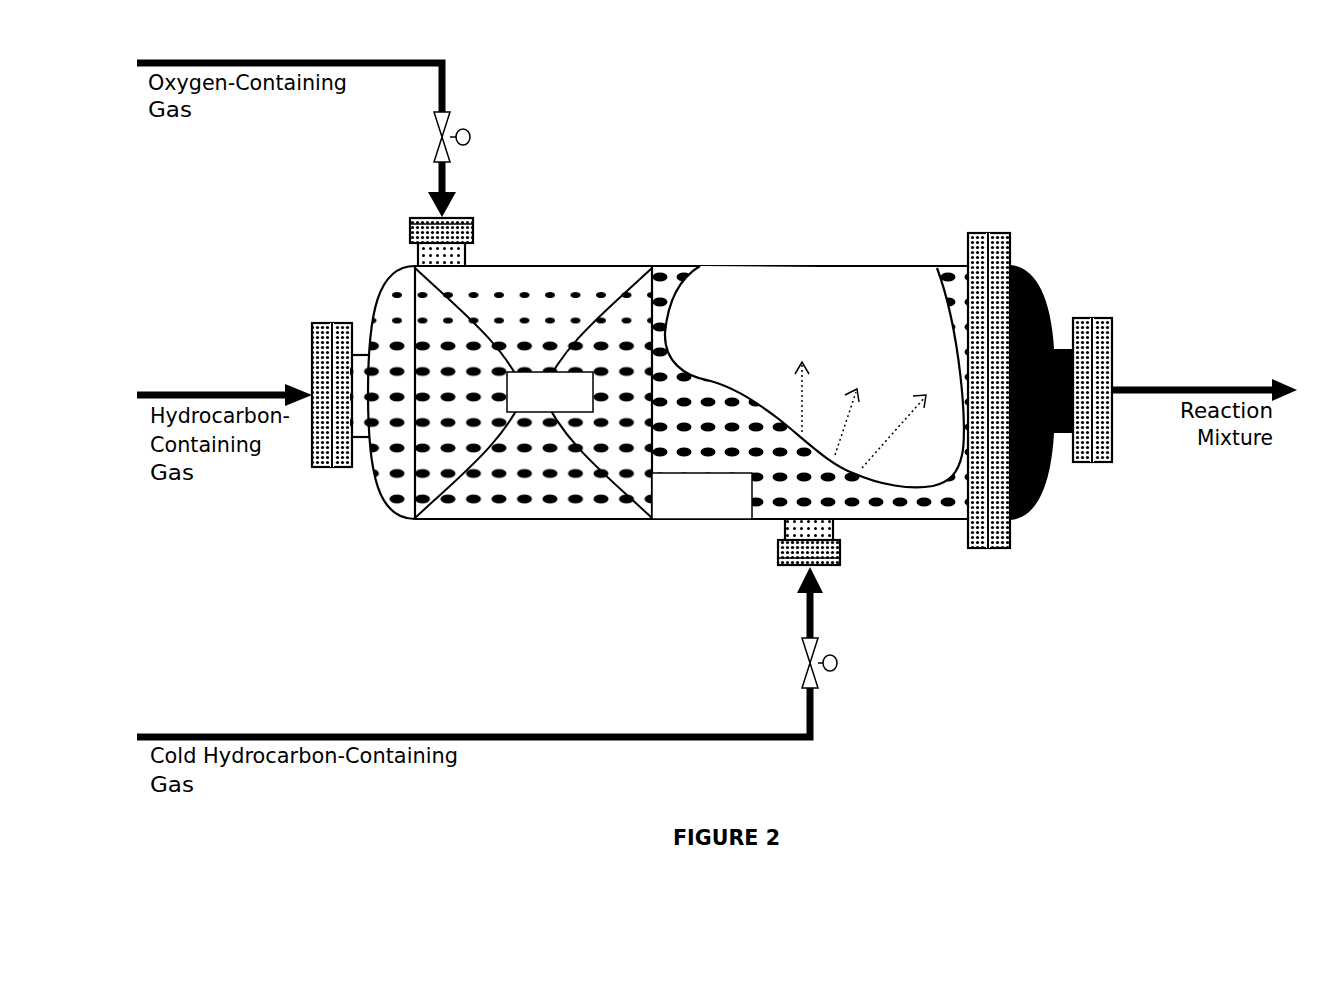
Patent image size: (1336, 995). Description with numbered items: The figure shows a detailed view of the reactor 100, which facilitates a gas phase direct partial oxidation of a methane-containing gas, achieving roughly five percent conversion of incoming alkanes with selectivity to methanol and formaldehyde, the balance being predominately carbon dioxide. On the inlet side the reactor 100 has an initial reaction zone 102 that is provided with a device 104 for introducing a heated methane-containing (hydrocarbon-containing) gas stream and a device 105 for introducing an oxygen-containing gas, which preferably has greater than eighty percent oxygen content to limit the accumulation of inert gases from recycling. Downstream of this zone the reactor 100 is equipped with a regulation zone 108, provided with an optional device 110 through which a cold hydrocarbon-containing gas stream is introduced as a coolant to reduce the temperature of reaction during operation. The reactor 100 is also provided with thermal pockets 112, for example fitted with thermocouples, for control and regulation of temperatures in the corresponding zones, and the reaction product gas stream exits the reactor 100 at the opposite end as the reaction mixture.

The reactor 100 is at (711, 352).
The initial reaction zone 102 is at (533, 393).
The device for introducing a heated methane-containing gas stream 104 is at (325, 415).
The device for introducing an oxygen-containing gas 105 is at (406, 241).
The regulation zone 108 is at (865, 415).
The device for introducing a cold hydrocarbon-containing gas stream 110 is at (776, 546).
The thermal pockets 112 is at (808, 392).